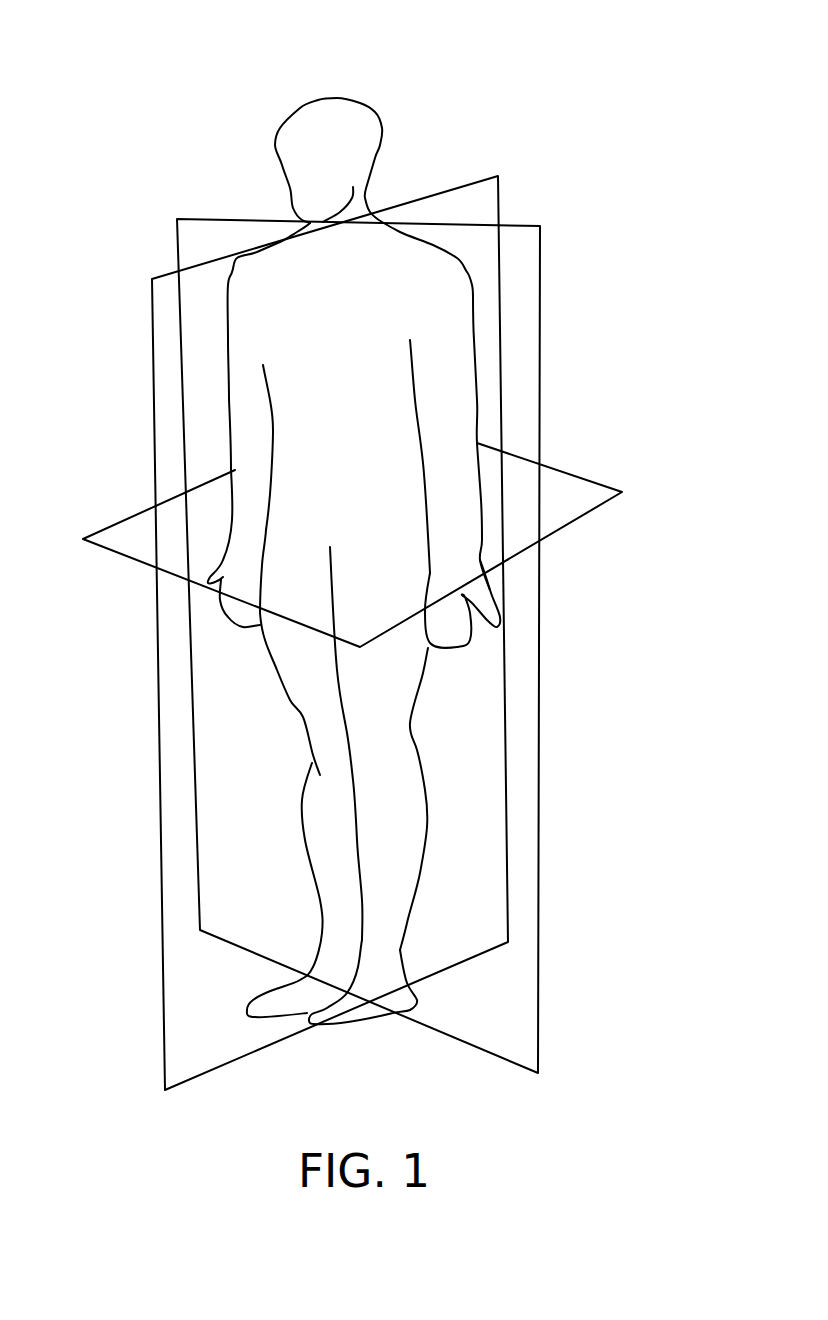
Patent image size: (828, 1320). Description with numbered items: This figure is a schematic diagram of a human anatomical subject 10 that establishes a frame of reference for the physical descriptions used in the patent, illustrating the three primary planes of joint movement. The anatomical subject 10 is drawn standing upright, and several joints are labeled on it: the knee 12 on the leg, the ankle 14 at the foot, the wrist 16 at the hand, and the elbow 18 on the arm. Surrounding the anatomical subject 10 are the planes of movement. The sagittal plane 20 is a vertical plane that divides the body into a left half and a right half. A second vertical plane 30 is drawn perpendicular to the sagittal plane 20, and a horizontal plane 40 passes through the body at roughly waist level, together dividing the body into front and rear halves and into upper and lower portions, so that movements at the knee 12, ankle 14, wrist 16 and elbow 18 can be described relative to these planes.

The anatomical figure 10 is at (567, 136).
The knee 12 is at (398, 778).
The ankle 14 is at (382, 980).
The wrist 16 is at (457, 578).
The elbow 18 is at (448, 445).
The sagittal plane 20 is at (163, 1055).
The coronal plane 30 is at (540, 1047).
The transverse plane 40 is at (590, 493).